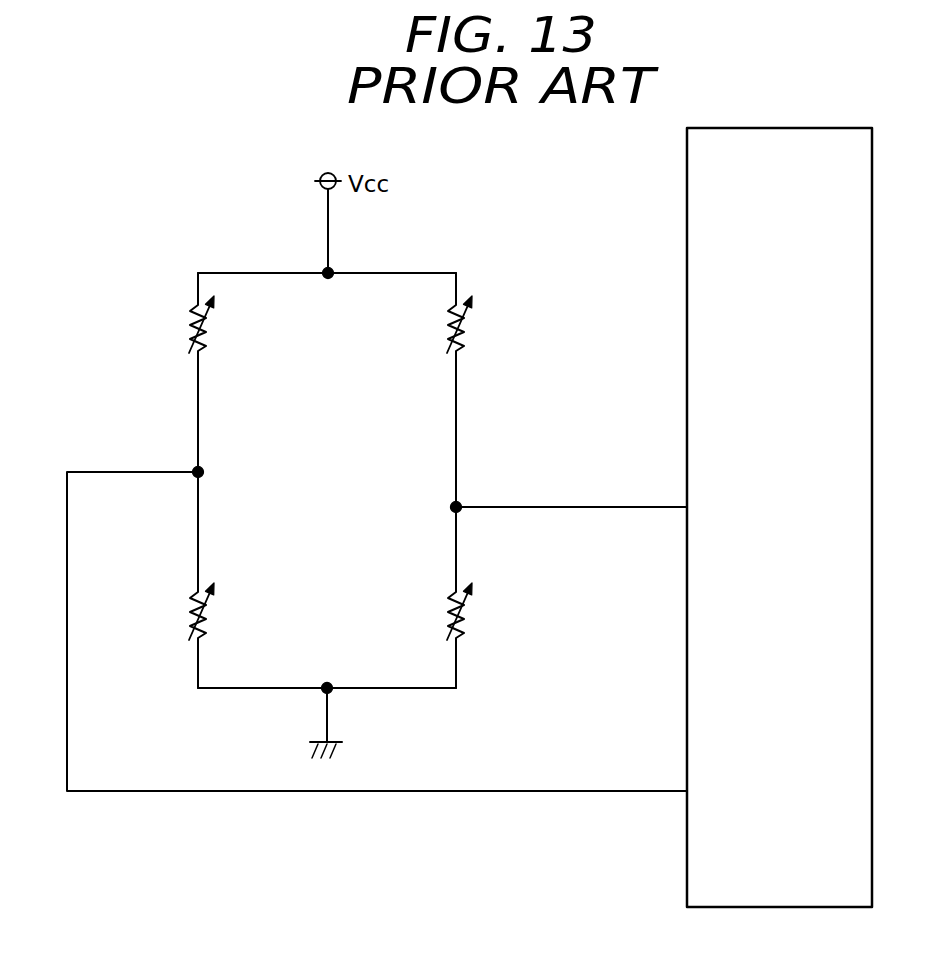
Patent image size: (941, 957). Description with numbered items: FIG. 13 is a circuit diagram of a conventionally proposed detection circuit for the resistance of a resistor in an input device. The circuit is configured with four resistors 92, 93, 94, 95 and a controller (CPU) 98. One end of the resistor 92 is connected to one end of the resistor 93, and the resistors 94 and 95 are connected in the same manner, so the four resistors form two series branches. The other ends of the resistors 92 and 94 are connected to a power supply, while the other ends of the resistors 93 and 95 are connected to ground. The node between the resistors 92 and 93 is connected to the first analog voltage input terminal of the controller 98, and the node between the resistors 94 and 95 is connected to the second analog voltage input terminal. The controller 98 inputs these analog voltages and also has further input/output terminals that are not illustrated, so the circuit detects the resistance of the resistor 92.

The resistor 92 is at (203, 345).
The resistor 93 is at (203, 630).
The resistor 94 is at (447, 340).
The resistor 95 is at (447, 624).
The controller (CPU) 98 is at (873, 797).